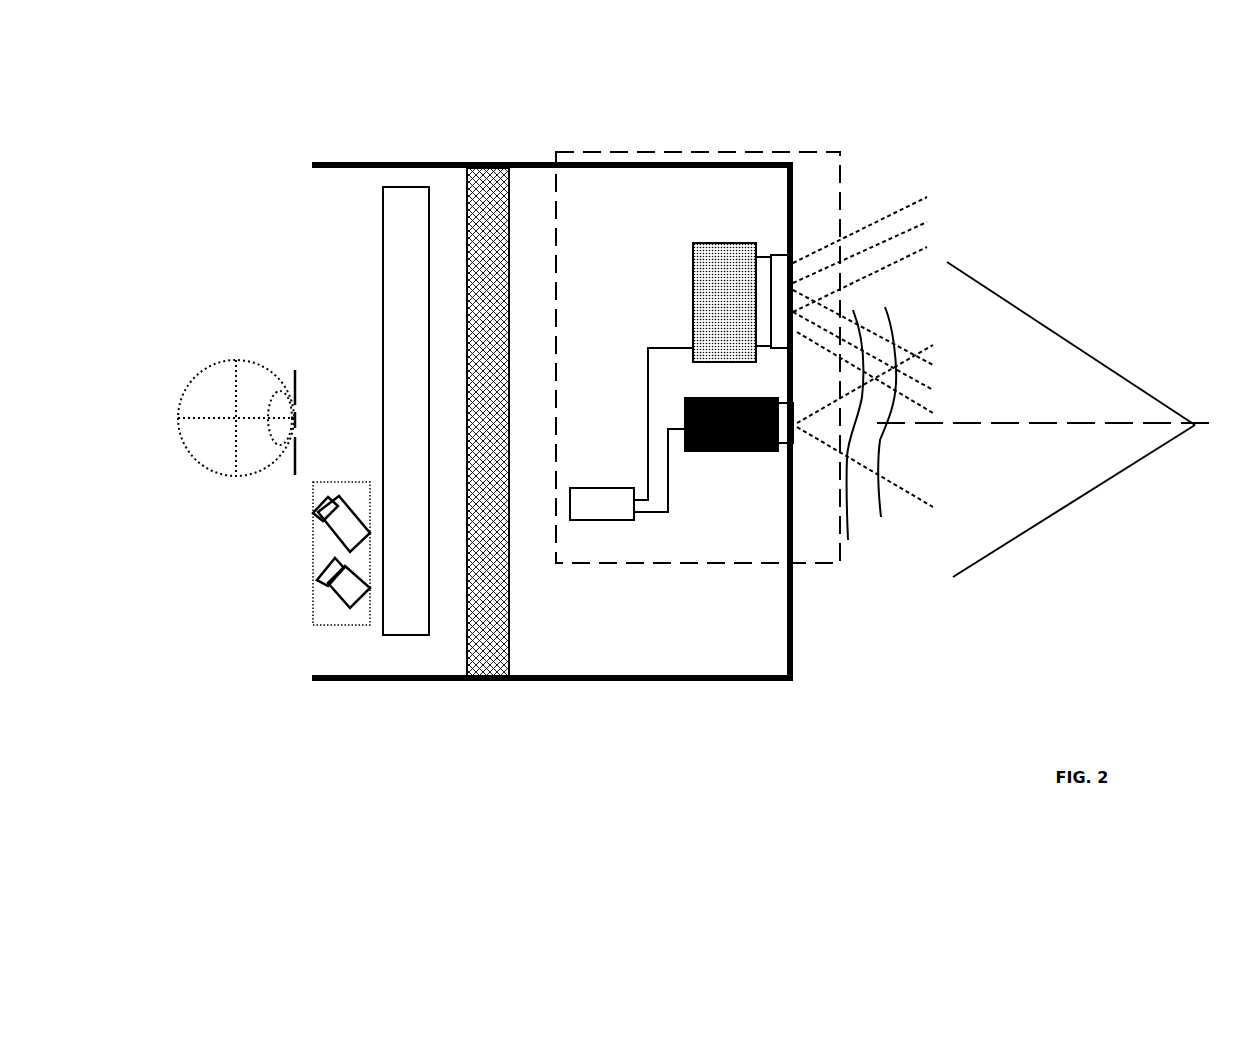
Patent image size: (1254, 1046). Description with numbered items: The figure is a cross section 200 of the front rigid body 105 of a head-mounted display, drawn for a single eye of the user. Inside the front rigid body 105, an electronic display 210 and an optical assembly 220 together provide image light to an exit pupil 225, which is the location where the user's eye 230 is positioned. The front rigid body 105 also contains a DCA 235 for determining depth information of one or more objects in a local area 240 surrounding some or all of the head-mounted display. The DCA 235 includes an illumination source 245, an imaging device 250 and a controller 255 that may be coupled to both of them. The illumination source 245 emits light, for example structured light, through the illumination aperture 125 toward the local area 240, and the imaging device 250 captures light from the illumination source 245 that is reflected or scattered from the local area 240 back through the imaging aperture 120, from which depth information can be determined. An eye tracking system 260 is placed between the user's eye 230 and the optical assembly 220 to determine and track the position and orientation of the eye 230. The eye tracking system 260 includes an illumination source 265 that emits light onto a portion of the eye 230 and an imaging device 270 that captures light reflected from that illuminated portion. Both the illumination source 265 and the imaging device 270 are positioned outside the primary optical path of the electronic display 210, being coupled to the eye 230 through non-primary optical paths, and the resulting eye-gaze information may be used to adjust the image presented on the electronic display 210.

The cross section 200 is at (1061, 72).
The front rigid body 105 is at (762, 681).
The imaging aperture 120 is at (797, 443).
The illumination aperture 125 is at (793, 270).
The electronic display 210 is at (467, 205).
The optical assembly 220 is at (397, 207).
The exit pupil 225 is at (295, 370).
The eye 230 is at (205, 468).
The DCA 235 is at (585, 152).
The local area 240 is at (1030, 492).
The illumination source 245 is at (725, 243).
The imaging device 250 is at (730, 455).
The controller 255 is at (578, 520).
The eye tracking system 260 is at (314, 627).
The illumination source 265 is at (322, 538).
The imaging device 270 is at (335, 593).